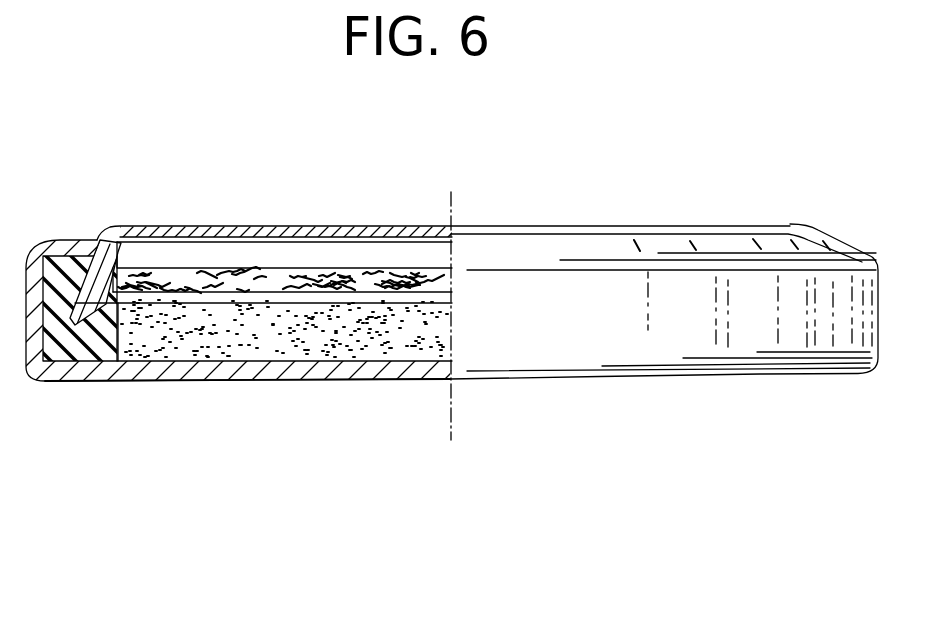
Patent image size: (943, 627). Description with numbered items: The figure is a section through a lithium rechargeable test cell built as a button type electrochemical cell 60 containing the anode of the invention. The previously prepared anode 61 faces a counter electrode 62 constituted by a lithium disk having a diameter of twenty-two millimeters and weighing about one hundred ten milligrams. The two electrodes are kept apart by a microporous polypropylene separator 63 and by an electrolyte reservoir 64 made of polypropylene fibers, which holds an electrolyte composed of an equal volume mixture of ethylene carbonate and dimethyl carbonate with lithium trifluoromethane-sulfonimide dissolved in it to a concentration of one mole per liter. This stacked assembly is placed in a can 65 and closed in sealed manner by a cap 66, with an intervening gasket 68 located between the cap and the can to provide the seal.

The button type electrochemical cell 60 is at (720, 216).
The anode 61 is at (240, 255).
The counter electrode 62 is at (221, 333).
The microporous polypropylene separator 63 is at (293, 299).
The electrolyte reservoir 64 is at (187, 265).
The can 65 is at (148, 370).
The cap 66 is at (303, 232).
The gasket 68 is at (75, 345).